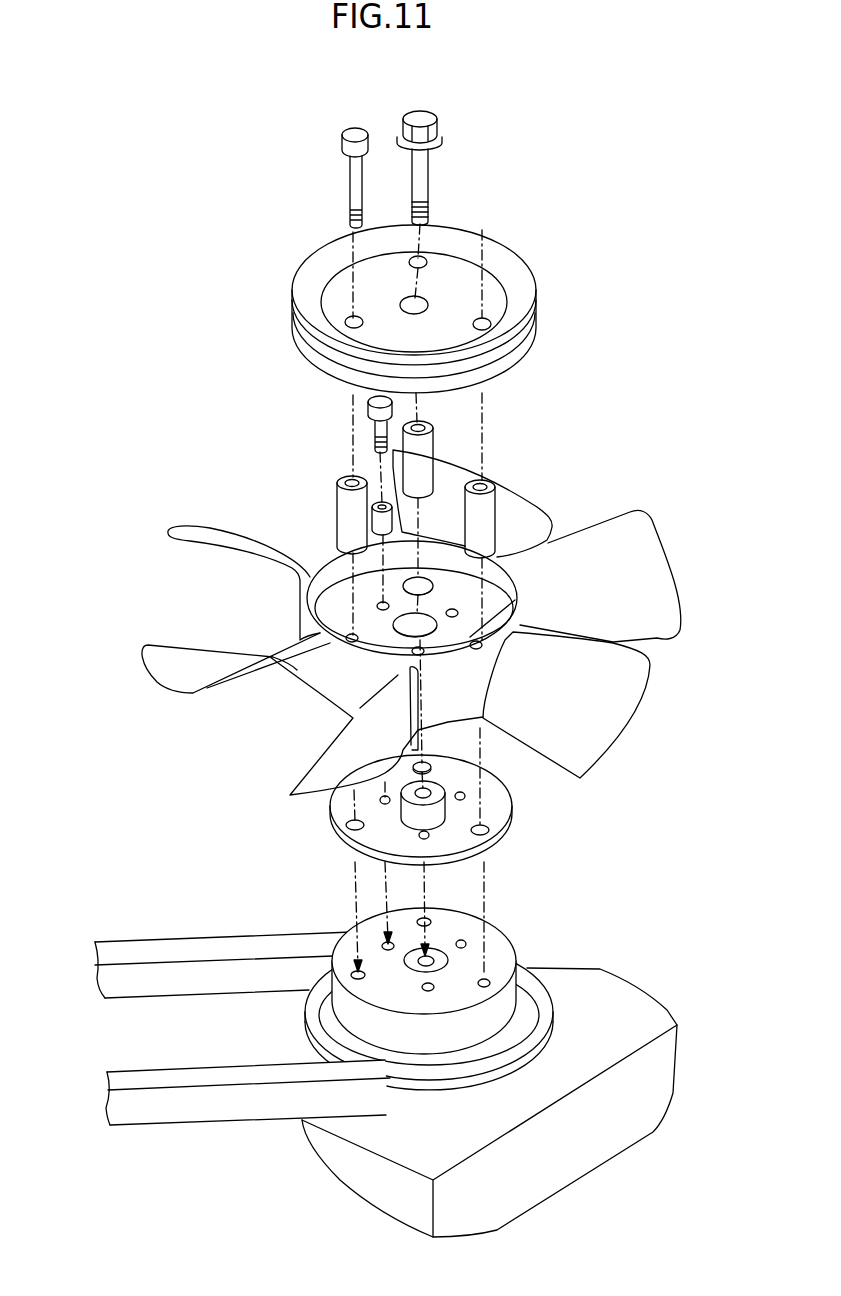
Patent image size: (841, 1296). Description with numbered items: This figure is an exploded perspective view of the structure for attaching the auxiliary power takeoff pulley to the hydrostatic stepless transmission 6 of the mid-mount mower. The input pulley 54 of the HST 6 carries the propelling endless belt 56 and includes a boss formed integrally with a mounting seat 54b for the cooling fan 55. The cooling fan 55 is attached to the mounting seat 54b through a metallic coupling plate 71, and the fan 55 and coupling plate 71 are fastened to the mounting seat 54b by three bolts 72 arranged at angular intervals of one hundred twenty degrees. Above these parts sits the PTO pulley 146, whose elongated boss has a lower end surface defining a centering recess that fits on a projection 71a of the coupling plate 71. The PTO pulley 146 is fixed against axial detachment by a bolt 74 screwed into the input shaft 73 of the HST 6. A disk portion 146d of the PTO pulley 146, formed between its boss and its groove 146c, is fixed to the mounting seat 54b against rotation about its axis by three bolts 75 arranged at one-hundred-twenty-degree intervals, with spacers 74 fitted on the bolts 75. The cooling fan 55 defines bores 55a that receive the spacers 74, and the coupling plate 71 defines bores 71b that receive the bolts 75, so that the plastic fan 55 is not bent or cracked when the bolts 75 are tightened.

The hydrostatic stepless transmission 6 is at (633, 1128).
The input pulley 54 is at (310, 1008).
The mounting seat 54b is at (503, 1003).
The cooling fan 55 is at (650, 521).
The bores 55a is at (440, 580).
The endless belt 56 is at (150, 940).
The metallic coupling plate 71 is at (514, 808).
The projection 71a is at (403, 815).
The bores 71b is at (450, 745).
The bolts 72 is at (368, 433).
The input shaft 73 is at (453, 960).
The bolt and spacers 74 is at (428, 166).
The bolts 75 is at (348, 180).
The PTO pulley 146 is at (412, 307).
The groove 146c is at (529, 333).
The disk portion 146d is at (481, 277).